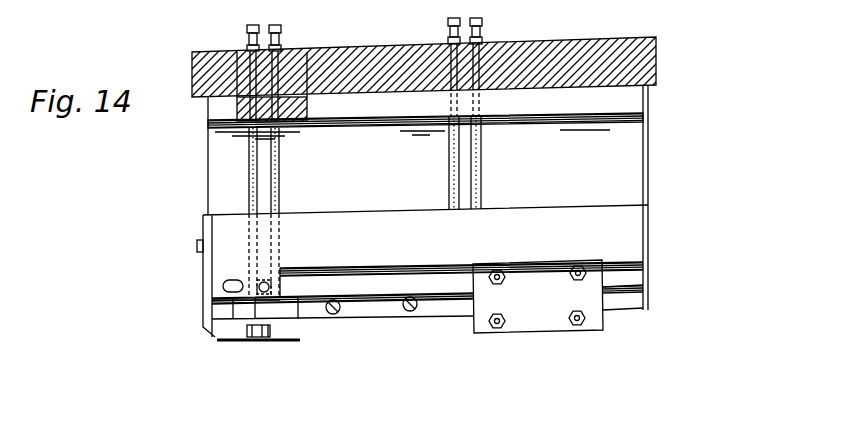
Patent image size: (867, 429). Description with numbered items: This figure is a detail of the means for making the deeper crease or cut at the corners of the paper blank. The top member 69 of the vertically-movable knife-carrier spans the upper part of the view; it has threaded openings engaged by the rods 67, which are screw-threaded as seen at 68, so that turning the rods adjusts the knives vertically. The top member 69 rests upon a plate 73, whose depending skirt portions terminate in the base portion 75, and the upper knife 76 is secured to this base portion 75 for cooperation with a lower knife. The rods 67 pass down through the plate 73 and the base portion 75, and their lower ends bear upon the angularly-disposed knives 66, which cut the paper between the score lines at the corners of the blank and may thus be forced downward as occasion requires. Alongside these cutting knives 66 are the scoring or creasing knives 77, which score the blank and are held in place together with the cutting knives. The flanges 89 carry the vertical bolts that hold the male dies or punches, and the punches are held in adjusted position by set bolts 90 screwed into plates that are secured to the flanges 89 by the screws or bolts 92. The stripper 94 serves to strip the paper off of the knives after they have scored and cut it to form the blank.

The top member 69 is at (214, 62).
The screw-threaded portion 68 is at (280, 48).
The rods 67 is at (251, 171).
The plate 73 is at (382, 108).
The base portion 75 is at (377, 218).
The upper knife 76 is at (205, 275).
The flanges 89 is at (410, 266).
The angularly-disposed knives 66 is at (282, 323).
The scoring or creasing knives 77 is at (238, 323).
The stripper 94 is at (244, 343).
The screws or bolts 92 is at (578, 268).
The set bolts 90 is at (572, 326).